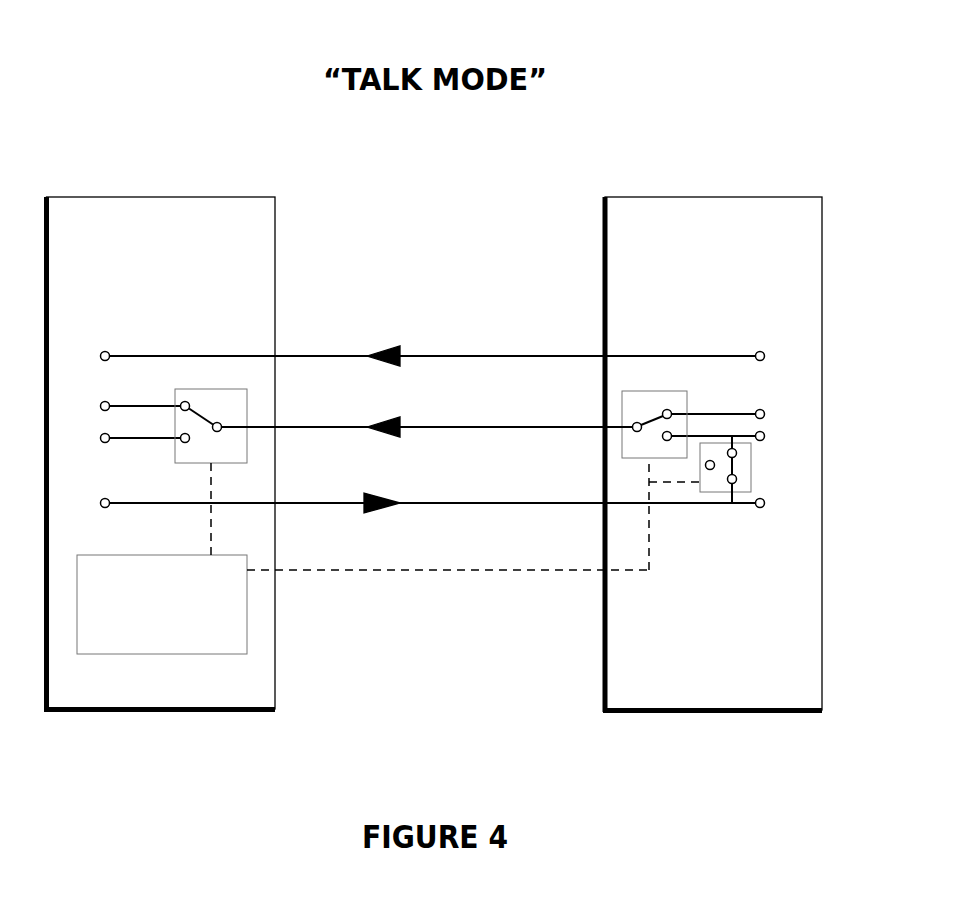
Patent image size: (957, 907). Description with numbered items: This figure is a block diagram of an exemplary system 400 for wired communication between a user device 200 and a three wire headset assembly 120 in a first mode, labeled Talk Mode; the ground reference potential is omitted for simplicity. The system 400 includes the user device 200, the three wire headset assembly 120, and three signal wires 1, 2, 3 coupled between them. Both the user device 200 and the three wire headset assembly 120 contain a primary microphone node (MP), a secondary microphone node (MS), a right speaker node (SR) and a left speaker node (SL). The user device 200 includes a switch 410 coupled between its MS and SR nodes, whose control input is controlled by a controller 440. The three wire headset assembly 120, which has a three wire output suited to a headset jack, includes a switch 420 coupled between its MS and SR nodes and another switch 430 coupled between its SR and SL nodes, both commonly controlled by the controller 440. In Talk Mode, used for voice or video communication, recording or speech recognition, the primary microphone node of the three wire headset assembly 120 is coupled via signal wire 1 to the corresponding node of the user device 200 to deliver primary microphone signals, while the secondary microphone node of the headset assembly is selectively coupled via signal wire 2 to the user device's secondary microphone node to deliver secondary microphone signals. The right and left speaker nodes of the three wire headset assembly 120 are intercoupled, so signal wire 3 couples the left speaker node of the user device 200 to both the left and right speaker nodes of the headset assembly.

The system 400 is at (790, 62).
The user device 200 is at (159, 454).
The three wire headset assembly 120 is at (712, 454).
The switch 410 is at (211, 426).
The switch 420 is at (654, 424).
The switch 430 is at (710, 489).
The controller 440 is at (388, 556).
The signal wire 1 is at (433, 346).
The signal wire 2 is at (427, 416).
The signal wire 3 is at (433, 489).